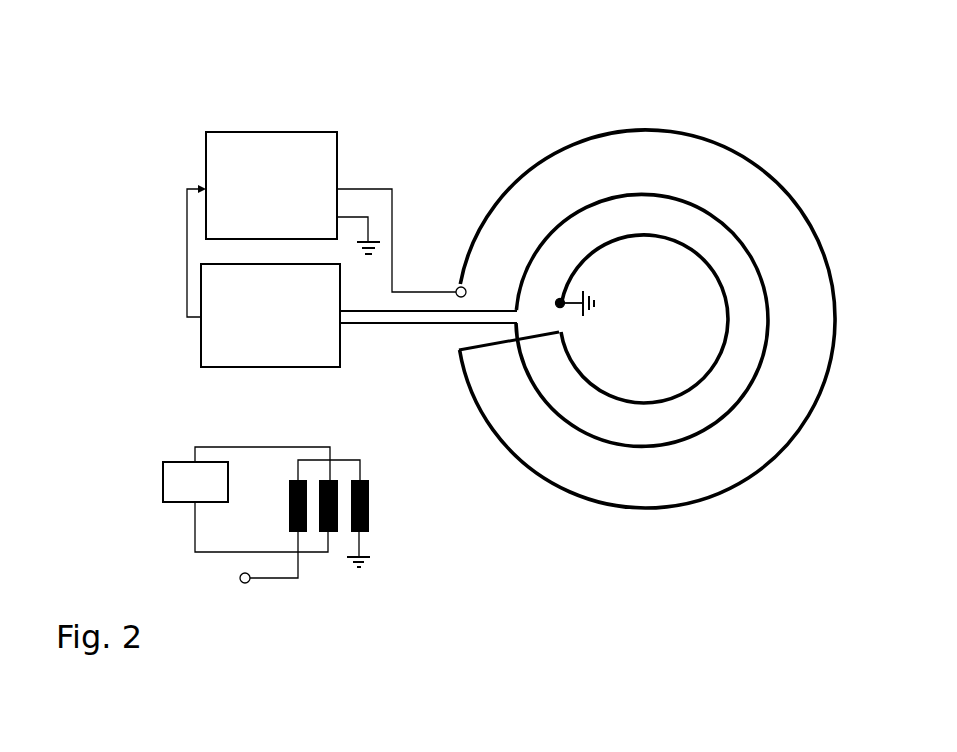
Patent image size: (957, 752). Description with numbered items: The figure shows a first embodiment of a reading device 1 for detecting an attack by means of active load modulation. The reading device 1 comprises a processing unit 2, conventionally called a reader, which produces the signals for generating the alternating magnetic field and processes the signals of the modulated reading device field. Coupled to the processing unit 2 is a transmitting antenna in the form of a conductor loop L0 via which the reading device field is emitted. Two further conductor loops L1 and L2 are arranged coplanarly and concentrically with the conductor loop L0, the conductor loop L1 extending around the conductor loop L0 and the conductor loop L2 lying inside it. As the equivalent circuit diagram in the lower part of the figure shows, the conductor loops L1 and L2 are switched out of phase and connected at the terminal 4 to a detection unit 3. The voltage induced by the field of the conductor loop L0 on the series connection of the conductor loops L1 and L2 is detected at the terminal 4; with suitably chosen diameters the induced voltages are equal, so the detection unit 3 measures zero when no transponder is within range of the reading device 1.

The reading device 1 is at (846, 135).
The processing unit 2 is at (210, 367).
The detection unit 3 is at (235, 132).
The terminal 4 is at (457, 283).
The conductor loop L1 is at (598, 135).
The conductor loop L0 is at (680, 200).
The conductor loop L2 is at (713, 277).